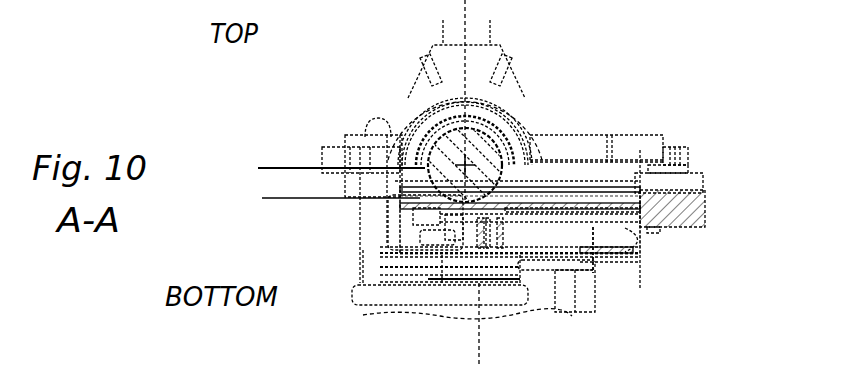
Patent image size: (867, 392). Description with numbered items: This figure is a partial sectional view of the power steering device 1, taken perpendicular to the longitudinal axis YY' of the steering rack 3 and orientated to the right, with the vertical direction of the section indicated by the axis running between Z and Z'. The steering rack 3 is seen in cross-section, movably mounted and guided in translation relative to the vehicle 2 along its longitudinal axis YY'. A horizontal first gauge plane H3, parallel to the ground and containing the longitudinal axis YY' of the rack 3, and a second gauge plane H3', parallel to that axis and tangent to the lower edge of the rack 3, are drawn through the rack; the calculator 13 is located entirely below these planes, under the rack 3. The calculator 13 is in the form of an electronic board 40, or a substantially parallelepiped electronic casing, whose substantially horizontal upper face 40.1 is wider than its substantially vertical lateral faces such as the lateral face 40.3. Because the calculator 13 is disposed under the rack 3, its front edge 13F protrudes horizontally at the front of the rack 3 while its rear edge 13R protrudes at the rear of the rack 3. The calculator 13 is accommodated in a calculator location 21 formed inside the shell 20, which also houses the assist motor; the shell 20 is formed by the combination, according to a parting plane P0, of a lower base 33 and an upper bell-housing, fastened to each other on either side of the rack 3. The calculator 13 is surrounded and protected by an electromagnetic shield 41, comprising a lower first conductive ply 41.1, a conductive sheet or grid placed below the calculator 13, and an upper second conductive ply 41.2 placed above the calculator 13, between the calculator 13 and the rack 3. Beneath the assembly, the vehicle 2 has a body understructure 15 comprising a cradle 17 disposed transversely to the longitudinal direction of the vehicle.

The power steering device 1 is at (632, 48).
The steering rack 3 is at (478, 150).
The longitudinal axis YY' is at (400, 118).
The vertical axis Z is at (488, 328).
The vertical axis Z' is at (477, 100).
The upper face 40.1 is at (548, 186).
The upper second conductive ply 41.2 is at (600, 187).
The parting plane P0 is at (685, 136).
The shell 20 is at (693, 162).
The rear edge 13R is at (626, 208).
The calculator location 21 is at (643, 238).
The electromagnetic shield 41 is at (634, 256).
The lower first conductive ply 41.1 is at (618, 258).
The vehicle 2 is at (603, 302).
The body understructure 15 is at (556, 265).
The cradle 17 is at (573, 308).
The lateral face 40.3 is at (547, 200).
The first gauge plane H3 is at (318, 154).
The second gauge plane H3' is at (311, 216).
The front edge 13F is at (404, 207).
The calculator 13 is at (428, 214).
The electronic board 40 is at (520, 225).
The base 33 is at (395, 238).